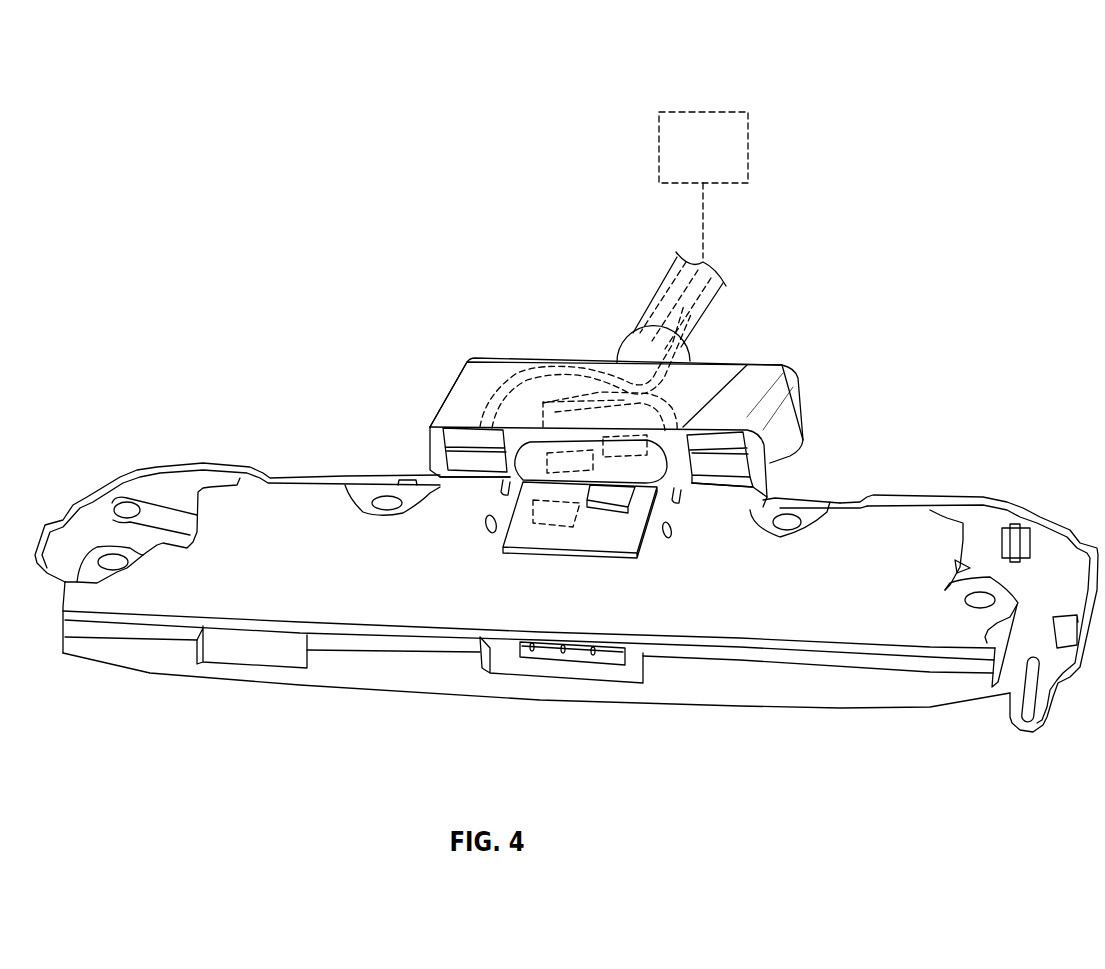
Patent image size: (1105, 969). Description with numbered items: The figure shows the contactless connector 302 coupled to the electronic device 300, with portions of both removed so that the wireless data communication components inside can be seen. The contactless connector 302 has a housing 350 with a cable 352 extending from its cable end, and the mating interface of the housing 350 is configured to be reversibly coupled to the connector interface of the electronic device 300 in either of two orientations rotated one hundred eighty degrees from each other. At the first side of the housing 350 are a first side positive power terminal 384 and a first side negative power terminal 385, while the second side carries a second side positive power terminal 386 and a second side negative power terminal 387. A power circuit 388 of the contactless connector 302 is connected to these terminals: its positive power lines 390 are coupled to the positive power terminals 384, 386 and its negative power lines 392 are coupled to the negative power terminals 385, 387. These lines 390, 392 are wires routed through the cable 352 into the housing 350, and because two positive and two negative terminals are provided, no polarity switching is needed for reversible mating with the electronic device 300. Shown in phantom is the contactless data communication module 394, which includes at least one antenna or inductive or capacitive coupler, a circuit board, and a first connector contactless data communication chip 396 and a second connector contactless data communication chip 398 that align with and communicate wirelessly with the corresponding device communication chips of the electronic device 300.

The electronic device 300 is at (1012, 495).
The contactless connector 302 is at (797, 358).
The housing 350 is at (727, 378).
The cable 352 is at (672, 270).
The first side positive power terminal 384 is at (770, 500).
The first side negative power terminal 385 is at (775, 428).
The second side positive power terminal 386 is at (430, 430).
The second side negative power terminal 387 is at (440, 476).
The power circuit 388 is at (712, 112).
The positive power lines 390 is at (518, 392).
The negative power lines 392 is at (567, 397).
The contactless data communication module 394 is at (595, 432).
The first connector contactless data communication chip 396 is at (673, 480).
The second connector contactless data communication chip 398 is at (520, 487).